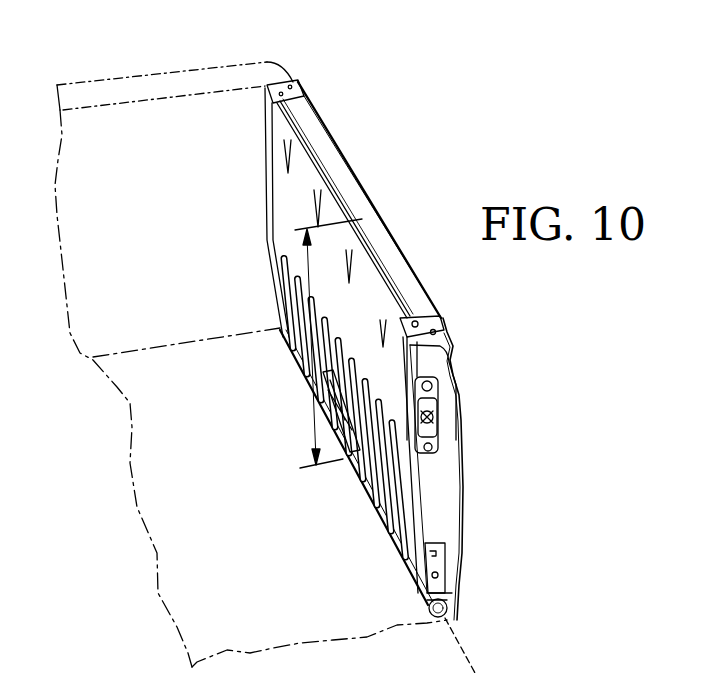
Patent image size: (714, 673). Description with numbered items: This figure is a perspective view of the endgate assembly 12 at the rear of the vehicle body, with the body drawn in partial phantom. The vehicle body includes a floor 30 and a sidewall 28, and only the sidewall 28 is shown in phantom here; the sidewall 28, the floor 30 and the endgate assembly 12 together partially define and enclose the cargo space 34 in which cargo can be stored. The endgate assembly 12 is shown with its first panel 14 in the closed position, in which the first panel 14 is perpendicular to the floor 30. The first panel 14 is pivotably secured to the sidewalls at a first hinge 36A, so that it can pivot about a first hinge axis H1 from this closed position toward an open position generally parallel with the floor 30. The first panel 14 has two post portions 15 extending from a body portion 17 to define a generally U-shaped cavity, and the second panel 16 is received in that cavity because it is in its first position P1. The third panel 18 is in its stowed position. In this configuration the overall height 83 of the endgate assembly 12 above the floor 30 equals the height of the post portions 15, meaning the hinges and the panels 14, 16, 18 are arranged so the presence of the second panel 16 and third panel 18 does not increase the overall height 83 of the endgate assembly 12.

The endgate assembly 12 is at (503, 387).
The first panel 14 is at (434, 488).
The post portion 15 is at (297, 83).
The second panel 16 is at (357, 205).
The body portion 17 is at (296, 300).
The third panel 18 is at (304, 188).
The second sidewall 28 is at (200, 68).
The floor 30 is at (163, 484).
The cargo space 34 is at (141, 132).
The first hinge 36A is at (457, 607).
The overall height 83 is at (305, 445).
The first position P1 is at (388, 243).
The first hinge axis H1 is at (464, 650).